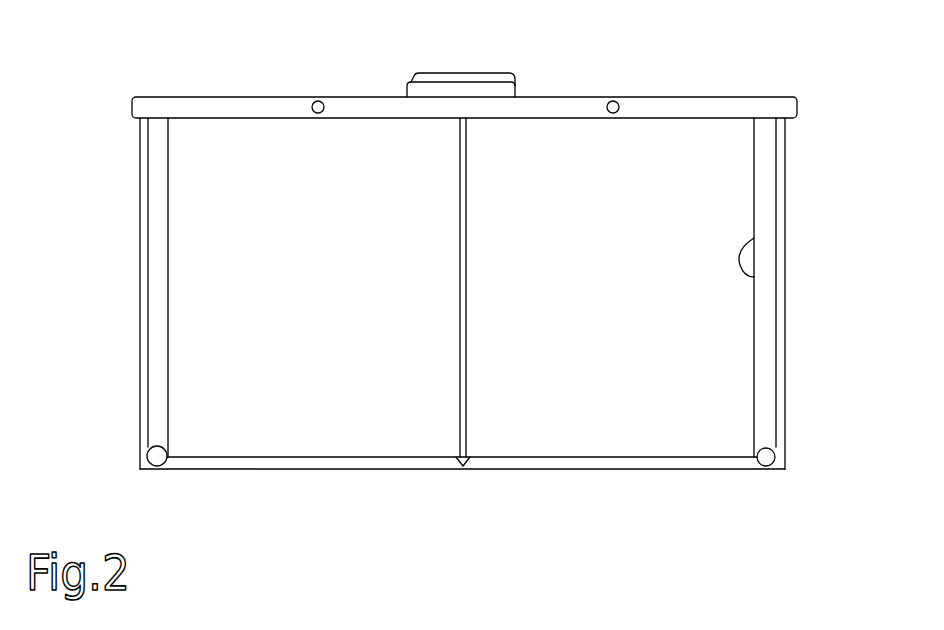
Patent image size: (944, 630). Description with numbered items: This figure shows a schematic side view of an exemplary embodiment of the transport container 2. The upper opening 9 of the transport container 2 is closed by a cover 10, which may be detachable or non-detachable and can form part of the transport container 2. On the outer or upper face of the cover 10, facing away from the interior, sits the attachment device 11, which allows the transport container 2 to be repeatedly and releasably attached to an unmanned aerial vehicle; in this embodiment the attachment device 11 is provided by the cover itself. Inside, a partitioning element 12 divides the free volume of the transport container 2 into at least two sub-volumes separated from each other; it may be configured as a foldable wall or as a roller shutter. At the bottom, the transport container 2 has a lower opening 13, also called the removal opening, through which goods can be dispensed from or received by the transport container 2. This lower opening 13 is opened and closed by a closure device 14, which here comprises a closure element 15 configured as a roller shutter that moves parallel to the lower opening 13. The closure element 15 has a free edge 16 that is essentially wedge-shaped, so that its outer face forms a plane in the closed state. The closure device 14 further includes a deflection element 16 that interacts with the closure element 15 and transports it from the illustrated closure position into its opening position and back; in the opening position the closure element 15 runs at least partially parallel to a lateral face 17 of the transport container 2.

The transport container 2 is at (103, 293).
The upper opening 9 is at (626, 73).
The cover 10 is at (680, 97).
The attachment device 11 is at (515, 78).
The partitioning element 12 is at (460, 375).
The lower opening 13 is at (237, 480).
The closure device 14 is at (683, 492).
The closure element 15 is at (573, 456).
The deflection element 16 is at (470, 478).
The lateral face 17 is at (753, 278).